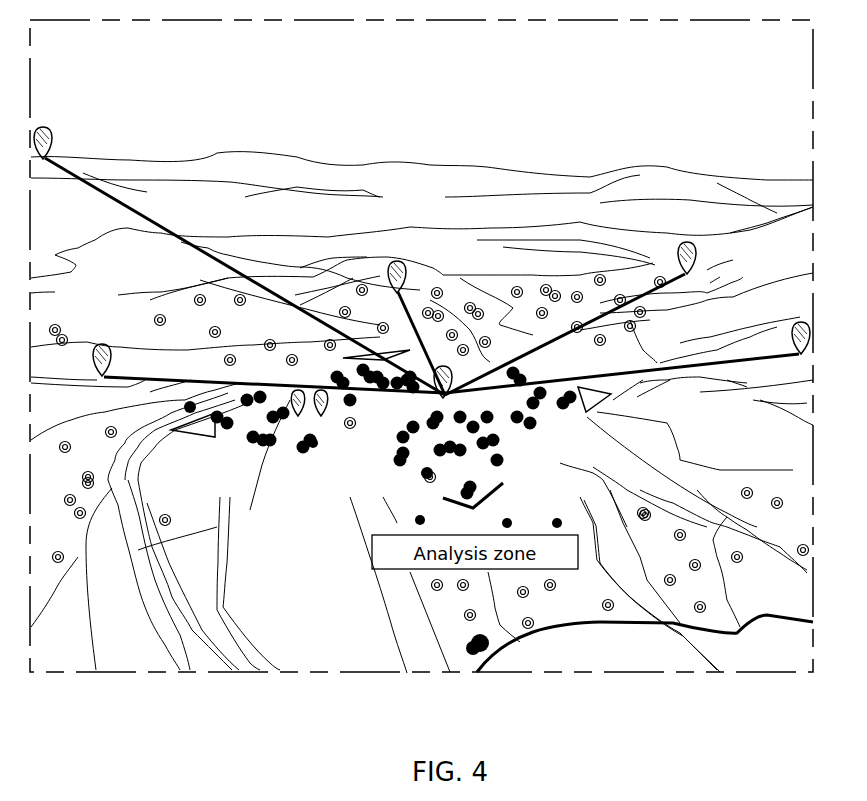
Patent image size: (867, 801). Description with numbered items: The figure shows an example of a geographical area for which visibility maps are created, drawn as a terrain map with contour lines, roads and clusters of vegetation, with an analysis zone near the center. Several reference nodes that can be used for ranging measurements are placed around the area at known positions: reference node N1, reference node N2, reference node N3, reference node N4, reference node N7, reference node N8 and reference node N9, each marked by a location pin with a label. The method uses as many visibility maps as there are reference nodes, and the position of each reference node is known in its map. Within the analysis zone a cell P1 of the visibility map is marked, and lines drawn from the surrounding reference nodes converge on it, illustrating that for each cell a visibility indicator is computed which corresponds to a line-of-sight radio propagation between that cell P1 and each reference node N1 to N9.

The reference node N1 is at (347, 440).
The reference node N2 is at (100, 342).
The reference node N3 is at (58, 128).
The reference node N4 is at (213, 442).
The reference node N7 is at (680, 240).
The reference node N8 is at (795, 320).
The reference node N9 is at (400, 258).
The cell P1 is at (447, 400).